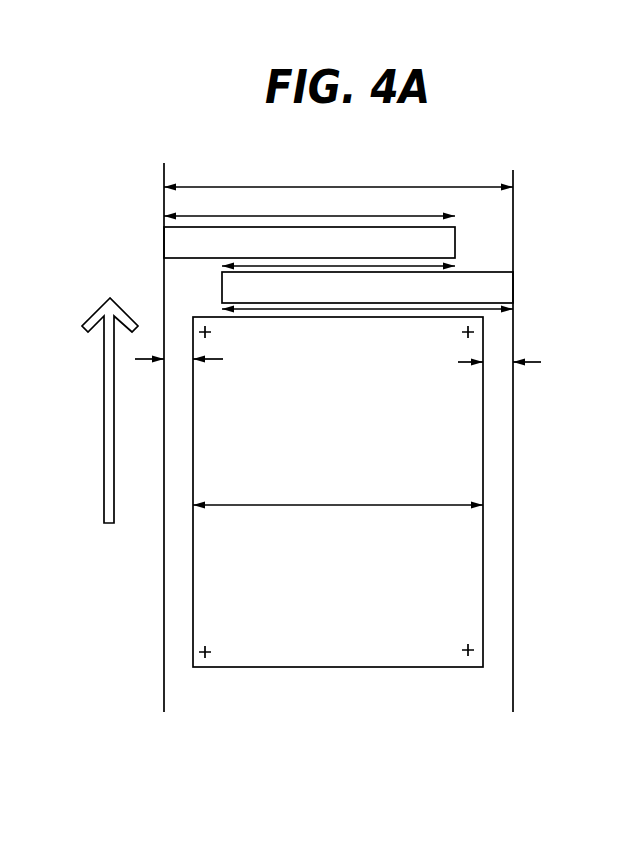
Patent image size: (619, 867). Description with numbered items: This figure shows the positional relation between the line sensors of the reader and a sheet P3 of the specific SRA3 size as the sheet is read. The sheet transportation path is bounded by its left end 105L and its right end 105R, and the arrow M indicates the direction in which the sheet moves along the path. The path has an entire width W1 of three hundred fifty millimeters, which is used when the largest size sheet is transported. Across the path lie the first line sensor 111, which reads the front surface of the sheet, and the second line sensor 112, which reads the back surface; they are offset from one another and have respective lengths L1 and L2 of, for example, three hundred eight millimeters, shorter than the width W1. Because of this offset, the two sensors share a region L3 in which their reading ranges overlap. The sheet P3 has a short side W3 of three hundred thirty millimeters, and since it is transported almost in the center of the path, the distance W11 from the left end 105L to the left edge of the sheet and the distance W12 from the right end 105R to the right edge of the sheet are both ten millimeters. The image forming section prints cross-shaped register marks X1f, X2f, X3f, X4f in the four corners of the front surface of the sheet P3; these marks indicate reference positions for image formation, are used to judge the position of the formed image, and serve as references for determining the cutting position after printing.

The left end of the transportation path 105L is at (163, 592).
The right end of the transportation path 105R is at (513, 597).
The first line sensor 111 is at (164, 240).
The second line sensor 112 is at (505, 287).
The sheet P3 is at (330, 668).
The arrow indicating sheet moving direction M is at (104, 311).
The width of the transportation path W1 is at (338, 177).
The length of the first line sensor L1 is at (309, 206).
The length of the second line sensor L2 is at (493, 317).
The overlap region of reading ranges L3 is at (430, 261).
The short side of the sheet W3 is at (338, 495).
The distance from left end of path to left end of sheet W11 is at (180, 362).
The distance from right end of path to right end of sheet W12 is at (498, 365).
The register mark X1f is at (212, 333).
The register mark X2f is at (462, 333).
The register mark X3f is at (212, 651).
The register mark X4f is at (462, 650).